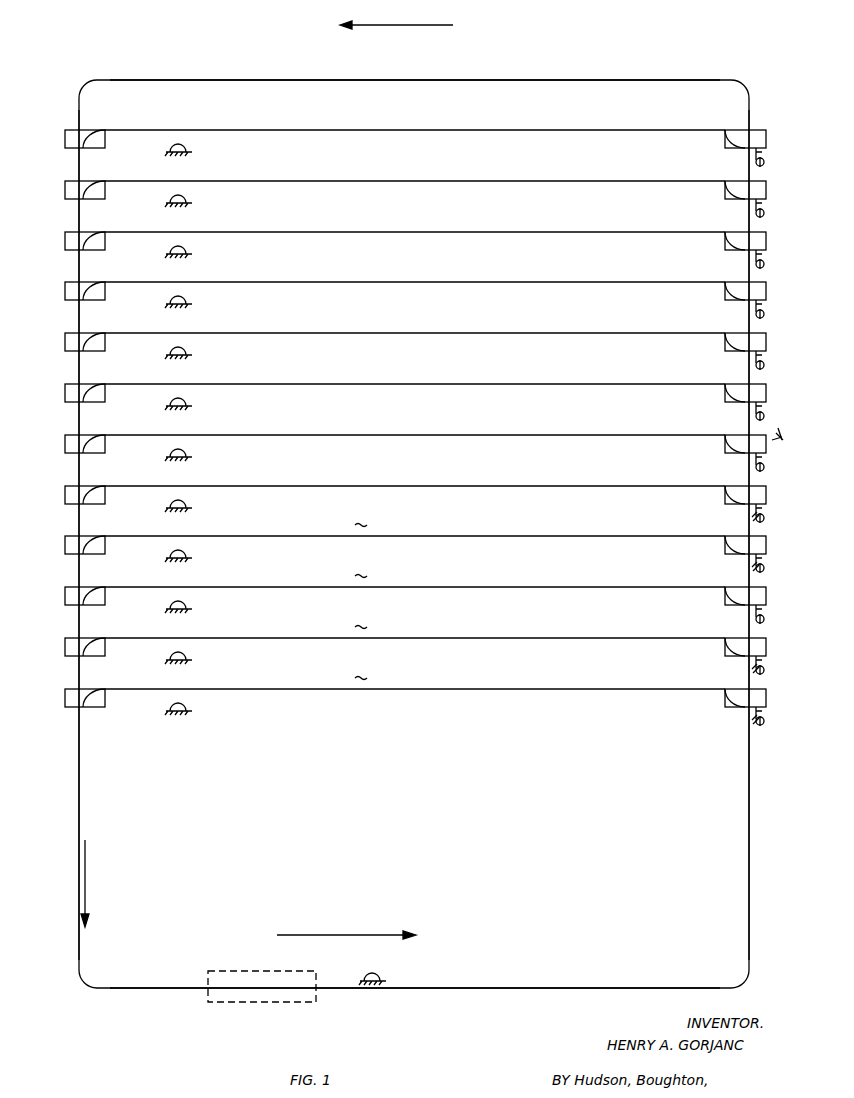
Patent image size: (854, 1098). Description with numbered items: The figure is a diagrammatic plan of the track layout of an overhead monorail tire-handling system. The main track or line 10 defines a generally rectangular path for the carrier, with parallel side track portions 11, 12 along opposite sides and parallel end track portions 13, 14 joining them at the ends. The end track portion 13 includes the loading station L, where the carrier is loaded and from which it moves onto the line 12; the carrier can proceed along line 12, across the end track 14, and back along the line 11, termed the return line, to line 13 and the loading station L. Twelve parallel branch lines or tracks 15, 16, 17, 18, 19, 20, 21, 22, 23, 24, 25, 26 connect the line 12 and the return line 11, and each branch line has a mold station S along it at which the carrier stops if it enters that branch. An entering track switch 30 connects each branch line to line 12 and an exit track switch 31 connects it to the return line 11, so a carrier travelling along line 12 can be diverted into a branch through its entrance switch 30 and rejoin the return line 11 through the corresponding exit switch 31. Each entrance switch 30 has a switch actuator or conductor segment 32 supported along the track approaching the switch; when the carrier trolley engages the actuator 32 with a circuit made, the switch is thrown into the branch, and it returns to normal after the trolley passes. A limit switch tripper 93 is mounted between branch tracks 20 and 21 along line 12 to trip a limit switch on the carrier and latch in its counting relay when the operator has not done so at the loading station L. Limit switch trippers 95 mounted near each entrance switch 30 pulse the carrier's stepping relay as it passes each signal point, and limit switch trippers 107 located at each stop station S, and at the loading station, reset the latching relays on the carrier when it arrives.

The main track or line 10 is at (746, 826).
The return line 11 is at (79, 796).
The line or track portion 12 is at (749, 767).
The end track portion 13 is at (161, 988).
The end track portion 14 is at (377, 81).
The branch line or track 15 is at (565, 689).
The branch line or track 16 is at (566, 638).
The branch line or track 17 is at (566, 587).
The branch line or track 18 is at (567, 536).
The branch line or track 19 is at (568, 486).
The branch line or track 20 is at (570, 435).
The branch line or track 21 is at (572, 384).
The branch line or track 22 is at (573, 333).
The branch line or track 23 is at (575, 282).
The branch line or track 24 is at (576, 232).
The branch line or track 25 is at (578, 181).
The branch line or track 26 is at (579, 130).
The entering track switch 30 is at (731, 144).
The exit track switch 31 is at (95, 149).
The switch actuator or conductor segment 32 is at (763, 154).
The limit switch tripper 93 is at (786, 436).
The limit switch tripper 95 is at (766, 518).
The limit switch tripper 107 is at (380, 976).
The mold station S is at (361, 593).
The loading station L is at (317, 978).